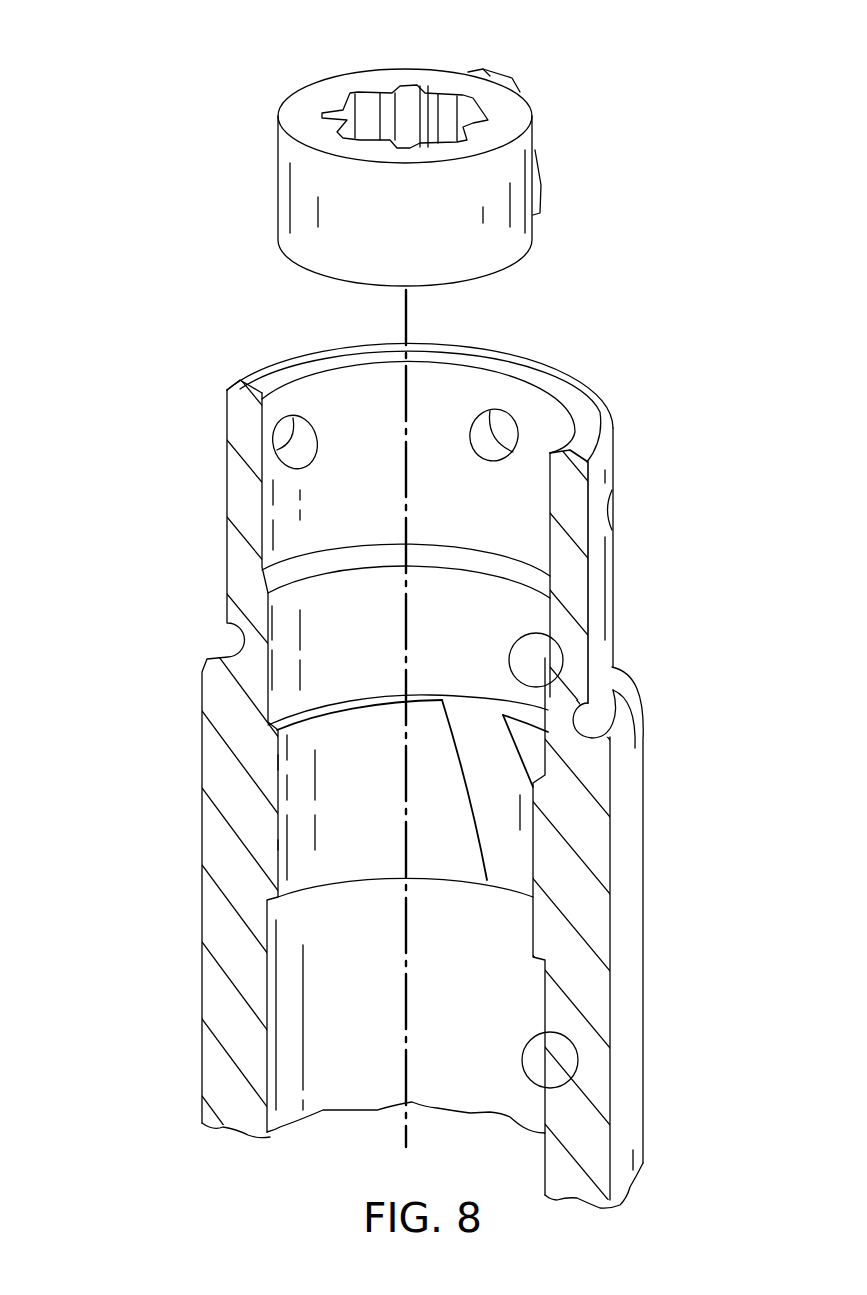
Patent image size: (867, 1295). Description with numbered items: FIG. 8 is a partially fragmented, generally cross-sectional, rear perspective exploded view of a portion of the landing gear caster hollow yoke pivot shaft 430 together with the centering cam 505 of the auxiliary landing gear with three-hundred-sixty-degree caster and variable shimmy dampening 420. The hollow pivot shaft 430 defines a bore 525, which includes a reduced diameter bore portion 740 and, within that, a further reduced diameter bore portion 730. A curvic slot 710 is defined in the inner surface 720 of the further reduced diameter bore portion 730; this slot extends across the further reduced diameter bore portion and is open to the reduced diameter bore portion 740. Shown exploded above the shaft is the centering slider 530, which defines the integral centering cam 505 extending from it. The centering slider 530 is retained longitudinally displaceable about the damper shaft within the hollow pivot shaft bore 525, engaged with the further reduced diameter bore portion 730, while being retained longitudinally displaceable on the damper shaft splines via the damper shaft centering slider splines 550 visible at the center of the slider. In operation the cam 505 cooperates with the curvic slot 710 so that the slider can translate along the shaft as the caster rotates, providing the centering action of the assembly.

The connector assembly 420 is at (124, 240).
The landing gear caster hollow yoke pivot shaft 430 is at (192, 990).
The centering cam 505 is at (490, 72).
The hollow yoke pivot shaft bore 525 is at (538, 423).
The centering slider 530 is at (278, 192).
The damper shaft centering slider splines 550 is at (340, 112).
The curvic slot 710 is at (503, 848).
The inner surface 720 is at (300, 750).
The further reduced diameter bore portion 730 is at (283, 860).
The reduced diameter bore portion 740 is at (350, 598).